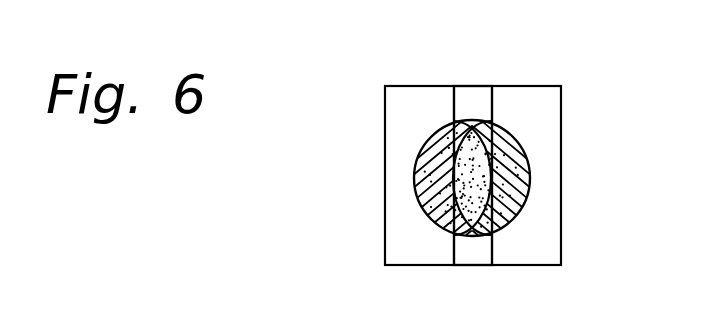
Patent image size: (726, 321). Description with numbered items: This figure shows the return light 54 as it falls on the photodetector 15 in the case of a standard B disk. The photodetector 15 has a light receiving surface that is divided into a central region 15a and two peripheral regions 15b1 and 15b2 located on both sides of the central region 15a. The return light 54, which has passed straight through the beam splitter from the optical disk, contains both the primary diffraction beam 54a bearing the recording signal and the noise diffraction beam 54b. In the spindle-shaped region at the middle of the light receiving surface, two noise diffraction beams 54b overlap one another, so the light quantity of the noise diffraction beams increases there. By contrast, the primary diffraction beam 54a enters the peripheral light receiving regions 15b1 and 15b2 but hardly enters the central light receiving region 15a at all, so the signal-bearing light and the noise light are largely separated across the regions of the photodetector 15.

The photodetector 15 is at (562, 240).
The central region 15a is at (478, 86).
The peripheral region 15b1 is at (421, 86).
The peripheral region 15b2 is at (543, 86).
The return light 54 is at (431, 224).
The primary diffraction beam 54a is at (417, 171).
The noise diffraction beam 54b is at (438, 131).